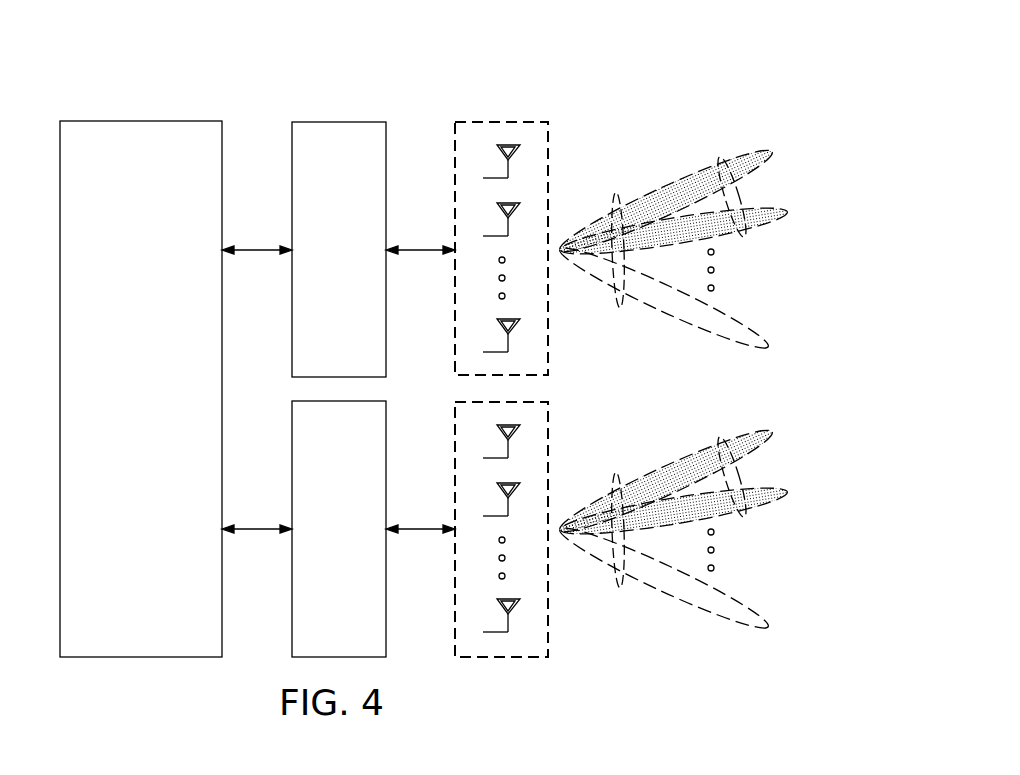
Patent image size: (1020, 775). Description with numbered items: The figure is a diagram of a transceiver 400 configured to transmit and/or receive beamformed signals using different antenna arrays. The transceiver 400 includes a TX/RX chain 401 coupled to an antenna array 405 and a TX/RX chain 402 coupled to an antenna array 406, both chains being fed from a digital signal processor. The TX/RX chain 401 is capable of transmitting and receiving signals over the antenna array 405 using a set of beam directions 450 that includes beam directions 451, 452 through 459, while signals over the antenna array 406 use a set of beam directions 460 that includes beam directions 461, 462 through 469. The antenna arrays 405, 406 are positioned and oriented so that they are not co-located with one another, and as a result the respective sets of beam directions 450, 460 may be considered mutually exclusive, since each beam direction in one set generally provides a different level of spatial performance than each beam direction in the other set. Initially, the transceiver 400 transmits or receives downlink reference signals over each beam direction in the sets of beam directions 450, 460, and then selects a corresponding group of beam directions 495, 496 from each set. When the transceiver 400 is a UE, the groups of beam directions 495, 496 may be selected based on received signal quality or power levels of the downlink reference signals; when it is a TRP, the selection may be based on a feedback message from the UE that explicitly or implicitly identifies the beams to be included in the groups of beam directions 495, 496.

The transceiver 400 is at (146, 60).
The TX/RX chain 401 is at (317, 297).
The TX/RX chain 402 is at (317, 577).
The antenna array 405 is at (518, 113).
The antenna array 406 is at (518, 668).
The set of beam directions 450 is at (617, 190).
The beam direction 451 is at (770, 155).
The beam direction 452 is at (787, 212).
The beam direction 459 is at (738, 320).
The set of beam directions 460 is at (617, 470).
The beam direction 461 is at (770, 437).
The beam direction 462 is at (787, 491).
The beam direction 469 is at (660, 587).
The group of beam directions 495 is at (718, 160).
The group of beam directions 496 is at (718, 440).